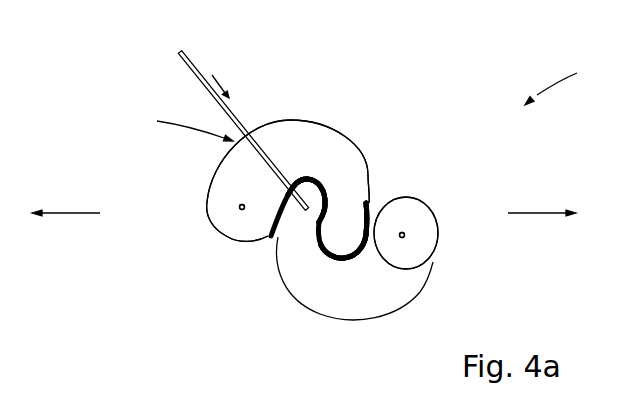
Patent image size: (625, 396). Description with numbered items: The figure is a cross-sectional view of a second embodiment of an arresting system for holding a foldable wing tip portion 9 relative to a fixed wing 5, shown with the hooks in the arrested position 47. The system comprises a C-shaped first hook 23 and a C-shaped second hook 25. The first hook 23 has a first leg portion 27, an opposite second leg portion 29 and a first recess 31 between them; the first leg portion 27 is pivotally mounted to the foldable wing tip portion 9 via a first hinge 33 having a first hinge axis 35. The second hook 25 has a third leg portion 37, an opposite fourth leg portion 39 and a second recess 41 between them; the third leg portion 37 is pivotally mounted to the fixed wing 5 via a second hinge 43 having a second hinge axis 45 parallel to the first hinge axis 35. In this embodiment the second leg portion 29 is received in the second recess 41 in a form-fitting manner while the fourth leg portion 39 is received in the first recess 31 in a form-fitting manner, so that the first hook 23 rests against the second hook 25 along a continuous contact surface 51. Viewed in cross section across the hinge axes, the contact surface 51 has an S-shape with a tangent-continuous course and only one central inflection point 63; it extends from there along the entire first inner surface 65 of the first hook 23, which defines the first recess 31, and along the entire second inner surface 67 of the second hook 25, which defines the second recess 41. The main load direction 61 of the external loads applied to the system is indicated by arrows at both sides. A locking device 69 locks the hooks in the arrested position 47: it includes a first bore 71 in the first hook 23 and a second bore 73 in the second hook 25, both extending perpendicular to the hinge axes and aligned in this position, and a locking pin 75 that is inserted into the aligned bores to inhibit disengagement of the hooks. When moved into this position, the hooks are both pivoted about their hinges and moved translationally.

The fixed wing 5 is at (159, 213).
The foldable wing tip portion 9 is at (459, 201).
The first hook 23 is at (370, 288).
The second hook 25 is at (262, 191).
The first leg portion 27 is at (413, 213).
The second leg portion 29 is at (323, 192).
The first recess 31 is at (338, 260).
The first hinge 33 is at (405, 236).
The first hinge axis 35 is at (466, 246).
The third leg portion 37 is at (217, 168).
The fourth leg portion 39 is at (363, 242).
The second recess 41 is at (313, 173).
The second hinge 43 is at (240, 210).
The second hinge axis 45 is at (240, 210).
The arrested position 47 is at (558, 77).
The contact surface 51 is at (325, 253).
The main load direction 61 is at (73, 212).
The central inflection point 63 is at (330, 220).
The first inner surface 65 is at (353, 231).
The second inner surface 67 is at (306, 174).
The locking device 69 is at (185, 126).
The first bore 71 is at (276, 228).
The second bore 73 is at (300, 176).
The locking pin 75 is at (203, 76).